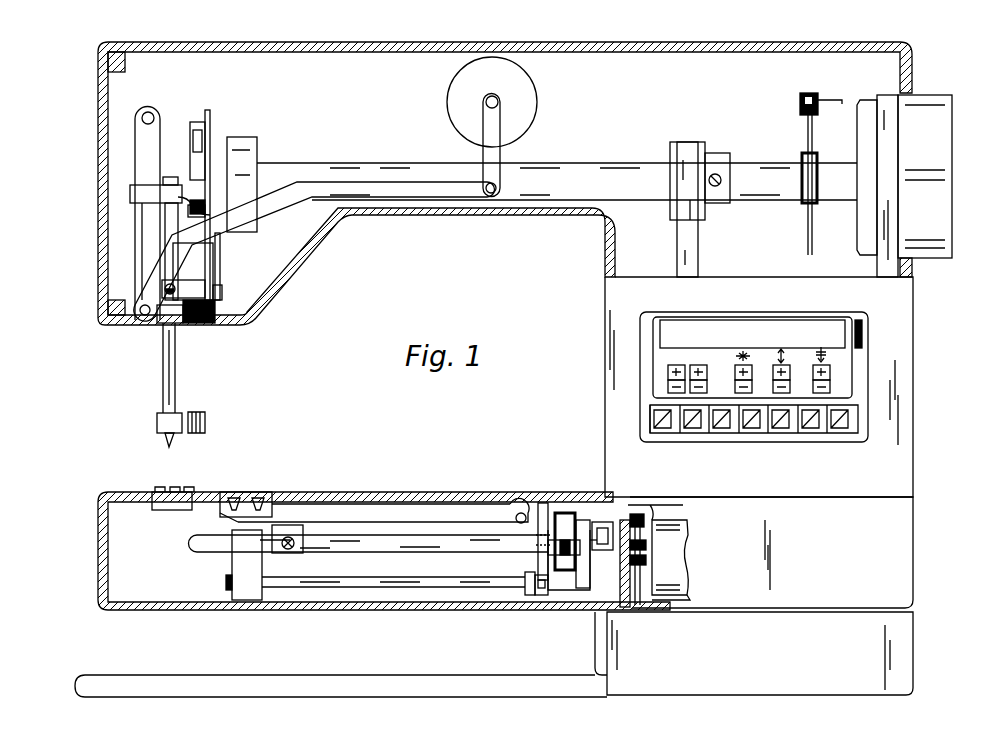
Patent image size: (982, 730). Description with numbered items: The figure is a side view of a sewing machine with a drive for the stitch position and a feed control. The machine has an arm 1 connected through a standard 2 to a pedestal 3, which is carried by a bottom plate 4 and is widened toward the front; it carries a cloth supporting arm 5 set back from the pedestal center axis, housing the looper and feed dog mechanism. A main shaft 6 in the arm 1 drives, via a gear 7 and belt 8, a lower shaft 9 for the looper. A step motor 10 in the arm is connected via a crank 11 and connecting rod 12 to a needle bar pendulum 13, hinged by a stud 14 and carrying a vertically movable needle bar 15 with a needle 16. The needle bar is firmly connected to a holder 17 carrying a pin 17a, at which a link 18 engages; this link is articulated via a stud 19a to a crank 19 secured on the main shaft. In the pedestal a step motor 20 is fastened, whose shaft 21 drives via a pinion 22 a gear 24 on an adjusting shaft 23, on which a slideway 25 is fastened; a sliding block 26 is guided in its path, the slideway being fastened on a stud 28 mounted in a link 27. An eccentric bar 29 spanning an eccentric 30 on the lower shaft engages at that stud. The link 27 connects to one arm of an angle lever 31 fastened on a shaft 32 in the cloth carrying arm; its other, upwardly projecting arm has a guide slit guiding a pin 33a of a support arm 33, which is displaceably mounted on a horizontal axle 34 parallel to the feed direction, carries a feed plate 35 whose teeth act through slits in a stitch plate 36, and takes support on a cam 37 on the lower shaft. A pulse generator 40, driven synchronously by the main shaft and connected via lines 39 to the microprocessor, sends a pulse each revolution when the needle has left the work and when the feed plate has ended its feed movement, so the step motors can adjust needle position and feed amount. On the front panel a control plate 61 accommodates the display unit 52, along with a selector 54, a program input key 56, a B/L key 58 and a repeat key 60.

The arm 1 is at (378, 41).
The standard 2 is at (906, 330).
The pedestal 3 is at (900, 540).
The bottom plate 4 is at (441, 678).
The cloth supporting arm 5 is at (211, 597).
The main shaft 6 is at (614, 170).
The gear 7 is at (718, 196).
The belt 8 is at (692, 245).
The lower shaft 9 is at (437, 541).
The step motor 10 is at (537, 103).
The crank 11 is at (496, 153).
The connecting rod 12 is at (330, 186).
The needle bar pendulum 13 is at (145, 235).
The stud 14 is at (152, 112).
The needle bar 15 is at (180, 352).
The needle 16 is at (175, 441).
The holder 17 is at (186, 285).
The pin 17a is at (222, 296).
The link 18 is at (218, 258).
The crank 19 is at (250, 155).
The stud 19a is at (178, 197).
The step motor 20 is at (676, 541).
The shaft 21 is at (676, 580).
The pinion 22 is at (640, 603).
The adjusting shaft 23 is at (628, 512).
The gear 24 is at (683, 507).
The slideway 25 is at (598, 543).
The sliding block 26 is at (592, 582).
The link 27 is at (565, 592).
The stud 28 is at (600, 521).
The eccentric bar 29 is at (565, 512).
The eccentric 30 is at (546, 553).
The angle lever 31 is at (532, 596).
The shaft 32 is at (486, 586).
The support arm 33 is at (422, 512).
The pin 33a is at (542, 501).
The horizontal axle 34 is at (515, 514).
The feed plate 35 is at (173, 510).
The stitch plate 36 is at (250, 493).
The cam 37 is at (301, 549).
The lines 39 is at (830, 104).
The pulse generator 40 is at (812, 93).
The display unit 52 is at (836, 322).
The selector 54 is at (655, 368).
The program input key 56 is at (661, 434).
The B/L key 58 is at (690, 434).
The repeat key 60 is at (720, 434).
The control plate 61 is at (862, 362).